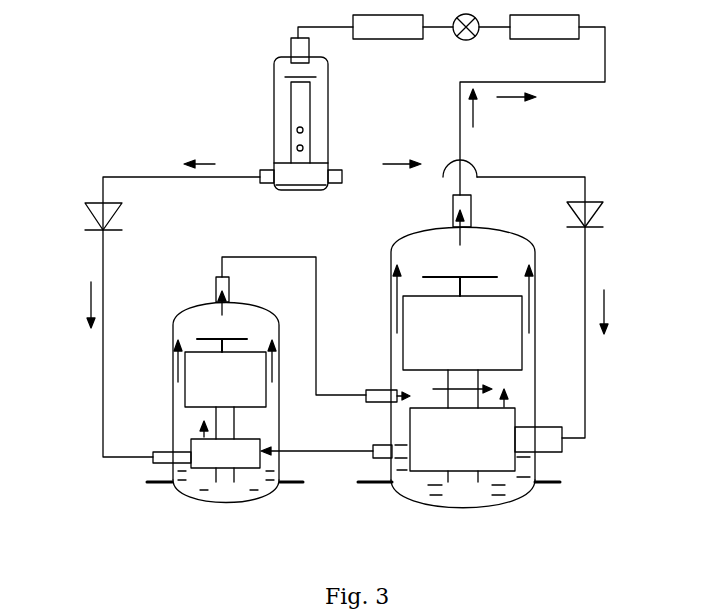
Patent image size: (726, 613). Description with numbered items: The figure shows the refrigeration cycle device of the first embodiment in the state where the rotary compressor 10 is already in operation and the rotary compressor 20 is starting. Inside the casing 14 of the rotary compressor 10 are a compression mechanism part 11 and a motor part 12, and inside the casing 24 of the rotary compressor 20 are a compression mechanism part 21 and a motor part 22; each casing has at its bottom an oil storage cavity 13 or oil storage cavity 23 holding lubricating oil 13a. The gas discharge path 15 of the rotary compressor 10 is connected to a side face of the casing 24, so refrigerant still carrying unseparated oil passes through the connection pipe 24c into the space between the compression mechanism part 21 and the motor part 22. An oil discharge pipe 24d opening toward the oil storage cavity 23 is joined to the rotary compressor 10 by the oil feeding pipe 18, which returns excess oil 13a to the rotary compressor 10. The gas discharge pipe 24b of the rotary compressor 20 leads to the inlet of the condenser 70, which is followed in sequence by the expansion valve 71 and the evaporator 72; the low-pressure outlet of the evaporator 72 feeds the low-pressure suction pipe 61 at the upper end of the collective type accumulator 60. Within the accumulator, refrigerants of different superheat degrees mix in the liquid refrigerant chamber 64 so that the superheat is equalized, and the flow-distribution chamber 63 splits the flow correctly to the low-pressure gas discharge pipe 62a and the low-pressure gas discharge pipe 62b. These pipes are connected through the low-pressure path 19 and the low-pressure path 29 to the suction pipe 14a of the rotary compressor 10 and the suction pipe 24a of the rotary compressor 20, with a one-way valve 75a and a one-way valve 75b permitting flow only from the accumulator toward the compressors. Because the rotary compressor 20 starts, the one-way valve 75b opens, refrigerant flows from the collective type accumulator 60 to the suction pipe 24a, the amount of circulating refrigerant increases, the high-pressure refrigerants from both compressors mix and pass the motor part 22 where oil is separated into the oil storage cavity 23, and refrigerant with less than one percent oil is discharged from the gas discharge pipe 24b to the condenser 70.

The rotary compressor 10 is at (180, 314).
The compression mechanism part 11 is at (260, 440).
The motor part 12 is at (185, 398).
The oil storage cavity 13 is at (260, 496).
The lubricating oil 13a is at (195, 484).
The casing 14 is at (172, 345).
The suction pipe 14a is at (148, 465).
The gas discharge path 15 is at (257, 257).
The oil feeding pipe 18 is at (320, 450).
The low-pressure path 19 is at (103, 405).
The rotary compressor 20 is at (389, 246).
The compression mechanism part 21 is at (517, 409).
The motor part 22 is at (403, 347).
The oil storage cavity 23 is at (508, 498).
The casing 24 is at (537, 262).
The suction pipe 24a is at (563, 452).
The gas discharge pipe 24b is at (472, 213).
The connection pipe 24c is at (367, 392).
The oil discharge pipe 24d is at (372, 460).
The low-pressure path 29 is at (585, 395).
The collective type accumulator 60 is at (274, 90).
The low-pressure suction pipe 61 is at (290, 50).
The low-pressure gas discharge pipe 62a is at (260, 173).
The low-pressure gas discharge pipe 62b is at (340, 173).
The flow-distribution chamber 63 is at (288, 178).
The liquid refrigerant chamber 64 is at (322, 133).
The condenser 70 is at (543, 40).
The expansion valve 71 is at (472, 37).
The evaporator 72 is at (388, 40).
The one-way valve 75a is at (90, 212).
The one-way valve 75b is at (598, 202).